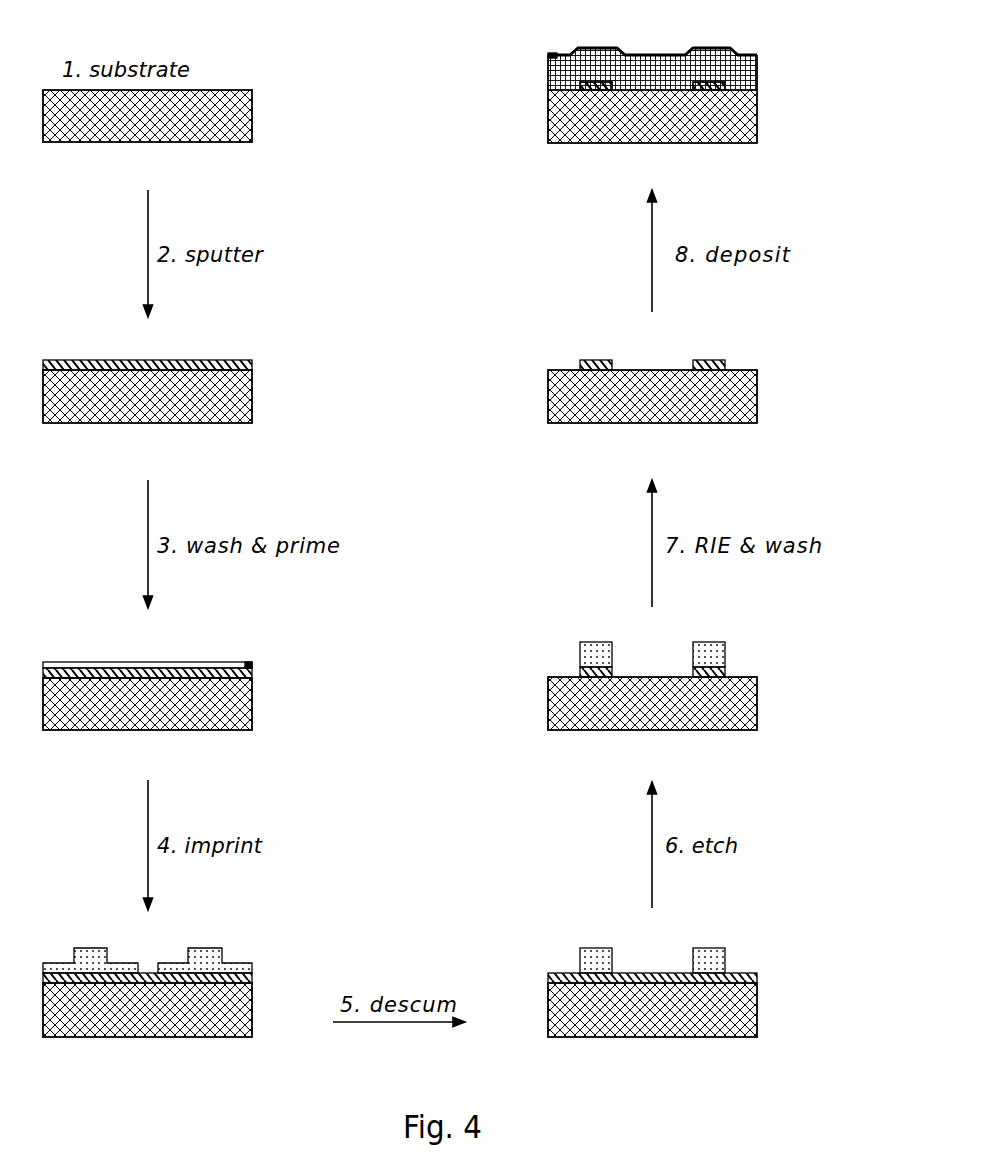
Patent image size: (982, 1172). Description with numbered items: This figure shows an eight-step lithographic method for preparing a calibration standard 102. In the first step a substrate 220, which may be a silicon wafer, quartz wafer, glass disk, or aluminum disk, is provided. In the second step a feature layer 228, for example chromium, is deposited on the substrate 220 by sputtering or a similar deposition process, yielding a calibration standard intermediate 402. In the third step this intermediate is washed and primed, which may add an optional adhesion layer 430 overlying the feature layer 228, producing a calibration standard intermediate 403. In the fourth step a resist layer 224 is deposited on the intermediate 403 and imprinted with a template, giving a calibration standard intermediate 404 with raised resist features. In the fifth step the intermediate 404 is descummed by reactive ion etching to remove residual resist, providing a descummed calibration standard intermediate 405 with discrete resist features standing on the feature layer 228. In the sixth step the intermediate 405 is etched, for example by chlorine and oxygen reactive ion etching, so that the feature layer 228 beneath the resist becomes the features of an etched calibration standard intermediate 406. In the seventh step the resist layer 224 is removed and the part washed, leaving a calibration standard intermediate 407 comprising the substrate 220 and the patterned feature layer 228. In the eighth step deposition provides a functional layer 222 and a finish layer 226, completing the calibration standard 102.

The substrate 220 is at (223, 129).
The feature layer 228 is at (240, 365).
The adhesion layer 430 is at (252, 666).
The resist layer 224 is at (200, 955).
The functional layer 222 is at (572, 69).
The finish layer 226 is at (548, 57).
The calibration standard 102 is at (810, 170).
The calibration standard intermediate 402 is at (278, 449).
The calibration standard intermediate 403 is at (280, 745).
The calibration standard intermediate 404 is at (298, 1065).
The descummed calibration standard intermediate 405 is at (800, 1065).
The etched calibration standard intermediate 406 is at (803, 760).
The calibration standard intermediate 407 is at (805, 455).